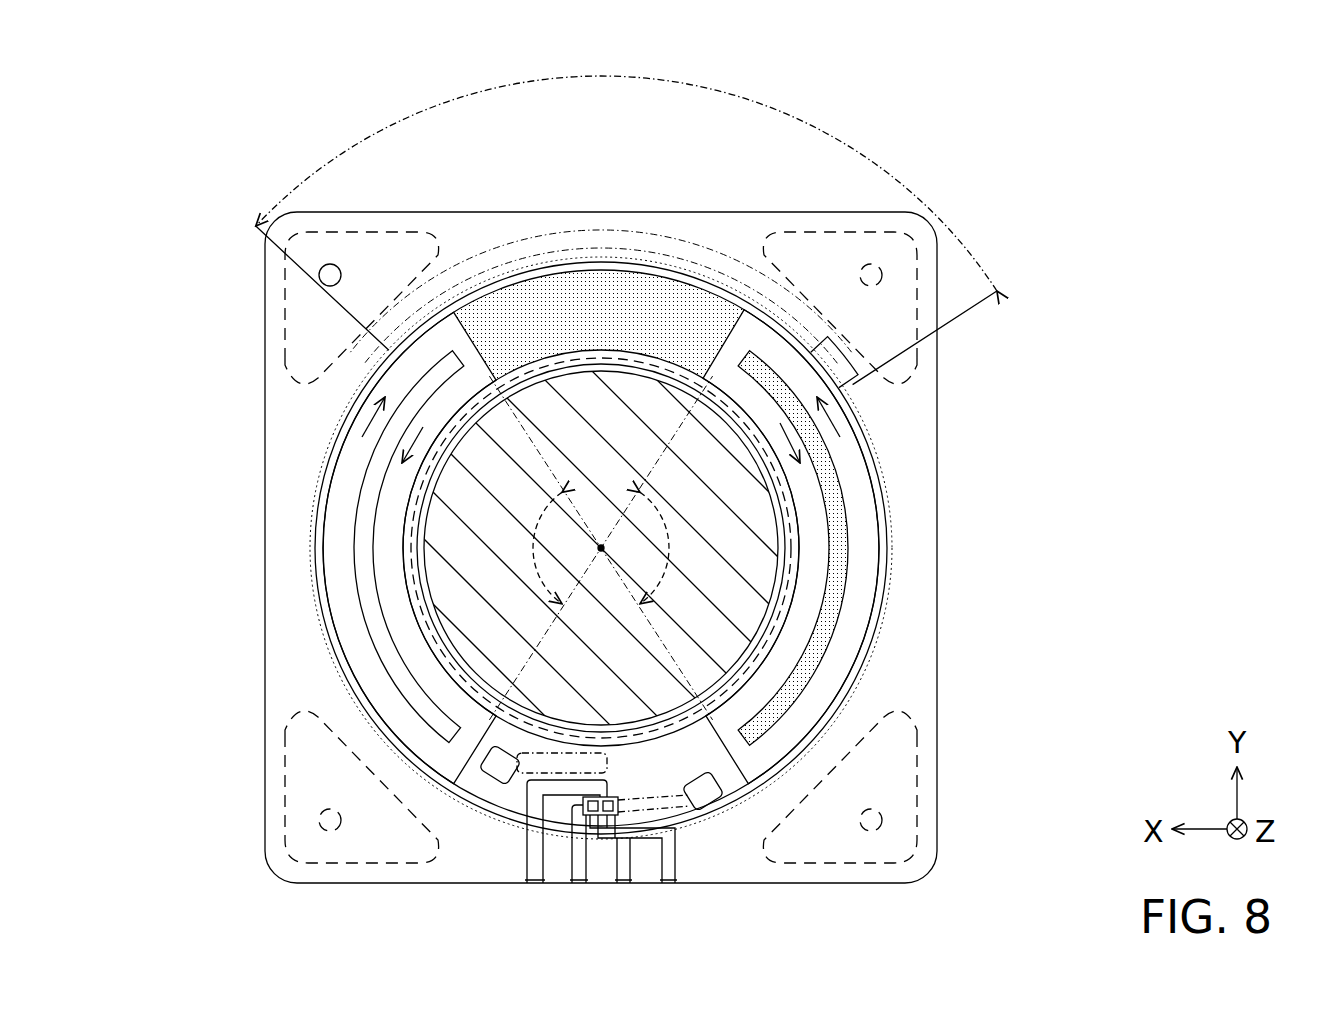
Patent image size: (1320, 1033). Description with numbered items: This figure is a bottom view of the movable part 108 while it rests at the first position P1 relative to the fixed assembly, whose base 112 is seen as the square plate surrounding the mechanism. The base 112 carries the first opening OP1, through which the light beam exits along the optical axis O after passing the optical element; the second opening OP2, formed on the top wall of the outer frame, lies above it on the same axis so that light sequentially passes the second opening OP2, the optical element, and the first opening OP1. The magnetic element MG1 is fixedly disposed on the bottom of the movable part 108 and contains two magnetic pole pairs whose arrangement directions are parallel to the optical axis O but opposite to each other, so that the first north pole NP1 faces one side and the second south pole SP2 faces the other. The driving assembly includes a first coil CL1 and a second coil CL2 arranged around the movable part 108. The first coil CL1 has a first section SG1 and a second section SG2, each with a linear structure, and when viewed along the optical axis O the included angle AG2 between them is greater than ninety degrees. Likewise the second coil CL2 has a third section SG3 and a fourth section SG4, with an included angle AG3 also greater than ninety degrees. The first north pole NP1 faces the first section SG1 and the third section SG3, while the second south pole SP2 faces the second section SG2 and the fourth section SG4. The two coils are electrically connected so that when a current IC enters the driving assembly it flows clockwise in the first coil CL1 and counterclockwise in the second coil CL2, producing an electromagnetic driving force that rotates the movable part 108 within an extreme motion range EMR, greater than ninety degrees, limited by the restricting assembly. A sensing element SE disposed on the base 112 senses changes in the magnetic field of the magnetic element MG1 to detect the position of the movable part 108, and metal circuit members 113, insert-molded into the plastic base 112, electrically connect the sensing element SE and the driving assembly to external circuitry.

The base 112 is at (275, 872).
The movable part 108 is at (779, 314).
The circuit members 113 is at (617, 842).
The extreme motion range EMR is at (626, 212).
The first section SG1 is at (458, 352).
The second section SG2 is at (462, 750).
The third section SG3 is at (748, 350).
The fourth section SG4 is at (730, 756).
The magnetic element MG1 is at (466, 302).
The first north pole NP1 is at (600, 300).
The second south pole SP2 is at (550, 780).
The first position P1 is at (849, 357).
The current IC is at (370, 420).
The first opening OP1 is at (797, 493).
The second opening OP2 is at (813, 527).
The first coil CL1 is at (318, 548).
The second coil CL2 is at (884, 548).
The included angle AG2 is at (532, 548).
The included angle AG3 is at (672, 548).
The sensing element SE is at (708, 805).
The optical axis O is at (602, 527).